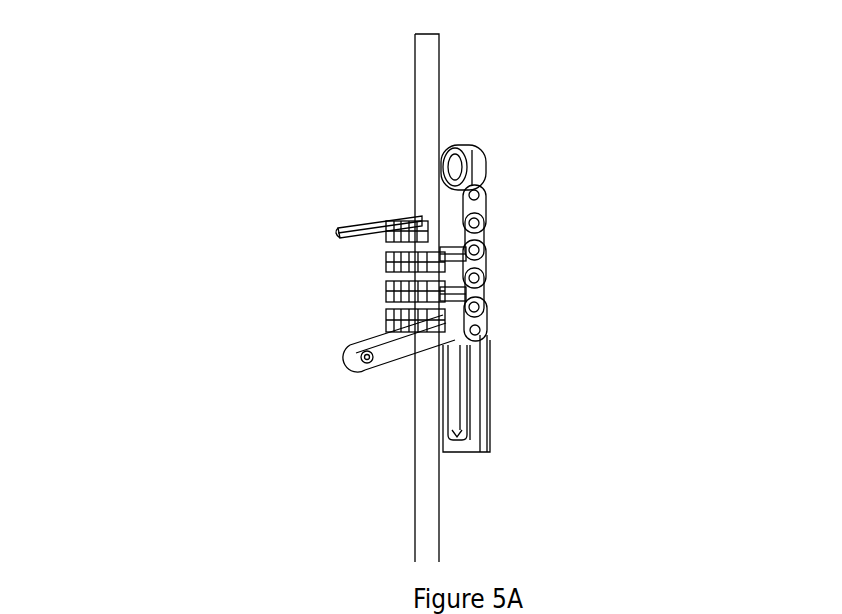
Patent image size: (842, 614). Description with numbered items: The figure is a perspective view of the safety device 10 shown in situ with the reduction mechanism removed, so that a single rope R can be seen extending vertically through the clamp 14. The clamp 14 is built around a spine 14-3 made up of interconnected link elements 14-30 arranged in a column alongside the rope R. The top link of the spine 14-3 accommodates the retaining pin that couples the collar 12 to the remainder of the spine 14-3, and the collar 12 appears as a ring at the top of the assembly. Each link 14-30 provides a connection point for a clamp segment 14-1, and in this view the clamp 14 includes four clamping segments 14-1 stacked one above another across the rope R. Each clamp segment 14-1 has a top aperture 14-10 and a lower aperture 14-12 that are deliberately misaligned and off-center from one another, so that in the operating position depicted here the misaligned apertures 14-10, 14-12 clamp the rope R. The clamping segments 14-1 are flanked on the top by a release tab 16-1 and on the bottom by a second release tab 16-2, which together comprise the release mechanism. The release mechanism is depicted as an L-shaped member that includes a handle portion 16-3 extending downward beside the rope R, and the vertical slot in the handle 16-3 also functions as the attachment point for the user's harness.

The safety device 10 is at (123, 79).
The rope R is at (423, 53).
The collar 12 is at (473, 165).
The clamp 14 is at (185, 287).
The clamp segment 14-1 is at (390, 318).
The spine 14-3 is at (659, 146).
The top aperture 14-10 is at (445, 272).
The lower aperture 14-12 is at (430, 296).
The link element 14-30 is at (475, 207).
The release tab 16-1 is at (340, 235).
The second release tab 16-2 is at (358, 362).
The handle portion 16-3 is at (475, 400).